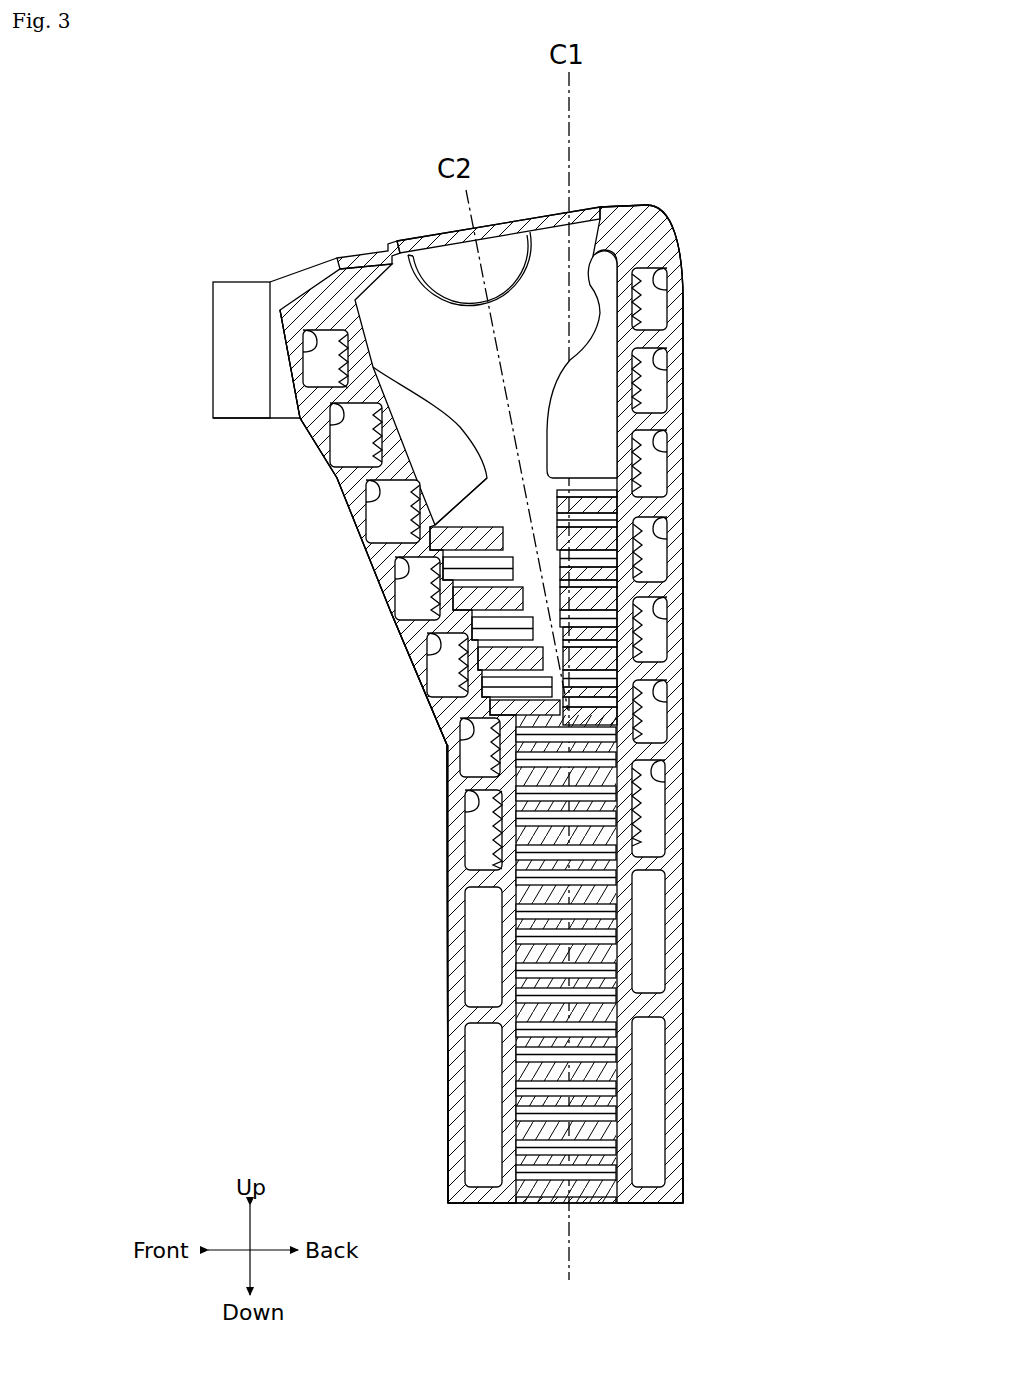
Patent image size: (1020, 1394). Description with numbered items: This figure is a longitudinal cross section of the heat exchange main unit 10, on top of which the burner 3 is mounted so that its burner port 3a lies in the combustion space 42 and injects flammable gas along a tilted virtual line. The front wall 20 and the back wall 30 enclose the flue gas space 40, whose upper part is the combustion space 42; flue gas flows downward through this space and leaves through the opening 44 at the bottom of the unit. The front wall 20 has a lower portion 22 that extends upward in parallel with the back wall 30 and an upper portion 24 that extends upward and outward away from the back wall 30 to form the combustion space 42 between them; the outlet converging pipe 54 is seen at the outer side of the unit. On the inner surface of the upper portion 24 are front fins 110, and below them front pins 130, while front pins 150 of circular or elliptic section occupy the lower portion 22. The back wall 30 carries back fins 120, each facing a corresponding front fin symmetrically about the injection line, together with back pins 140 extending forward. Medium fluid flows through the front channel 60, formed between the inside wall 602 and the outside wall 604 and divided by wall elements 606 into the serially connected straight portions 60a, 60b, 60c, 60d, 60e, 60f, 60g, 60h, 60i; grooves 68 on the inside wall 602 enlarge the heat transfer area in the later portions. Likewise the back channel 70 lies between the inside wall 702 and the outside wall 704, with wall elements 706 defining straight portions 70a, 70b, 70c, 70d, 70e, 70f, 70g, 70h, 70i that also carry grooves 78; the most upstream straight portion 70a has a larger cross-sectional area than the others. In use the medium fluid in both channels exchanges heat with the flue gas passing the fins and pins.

The burner 3 is at (438, 227).
The burner port 3a is at (630, 229).
The heat exchange main unit 10 is at (765, 152).
The front wall 20 is at (410, 770).
The lower portion 22 is at (425, 963).
The upper portion 24 is at (388, 607).
The back wall 30 is at (693, 808).
The flue gas space 40 is at (512, 200).
The combustion space 42 is at (395, 280).
The opening 44 is at (617, 1205).
The outlet converging pipe 54 is at (242, 280).
The front channel 60 is at (440, 1185).
The straight portion 60a is at (480, 1110).
The straight portion 60b is at (480, 920).
The straight portion 60c is at (480, 830).
The straight portion 60d is at (478, 752).
The straight portion 60e is at (448, 668).
The straight portion 60f is at (418, 595).
The straight portion 60g is at (390, 515).
The straight portion 60h is at (352, 440).
The straight portion 60i is at (330, 365).
The grooves 68 is at (300, 412).
The back channel 70 is at (690, 1185).
The straight portion 70a is at (650, 1110).
The straight portion 70b is at (650, 930).
The straight portion 70c is at (650, 820).
The straight portion 70d is at (650, 720).
The straight portion 70e is at (650, 640).
The straight portion 70f is at (650, 555).
The straight portion 70g is at (650, 470).
The straight portion 70h is at (650, 390).
The straight portion 70i is at (650, 305).
The grooves 78 is at (668, 323).
The front fins 110 is at (405, 373).
The back fins 120 is at (597, 325).
The front pins 130 is at (472, 443).
The back pins 140 is at (548, 506).
The front pins 150 is at (548, 1208).
The inside wall 602 is at (500, 1205).
The outside wall 604 is at (450, 1205).
The wall elements 606 is at (330, 340).
The inside wall 702 is at (633, 1205).
The outside wall 704 is at (683, 1205).
The wall elements 706 is at (655, 280).